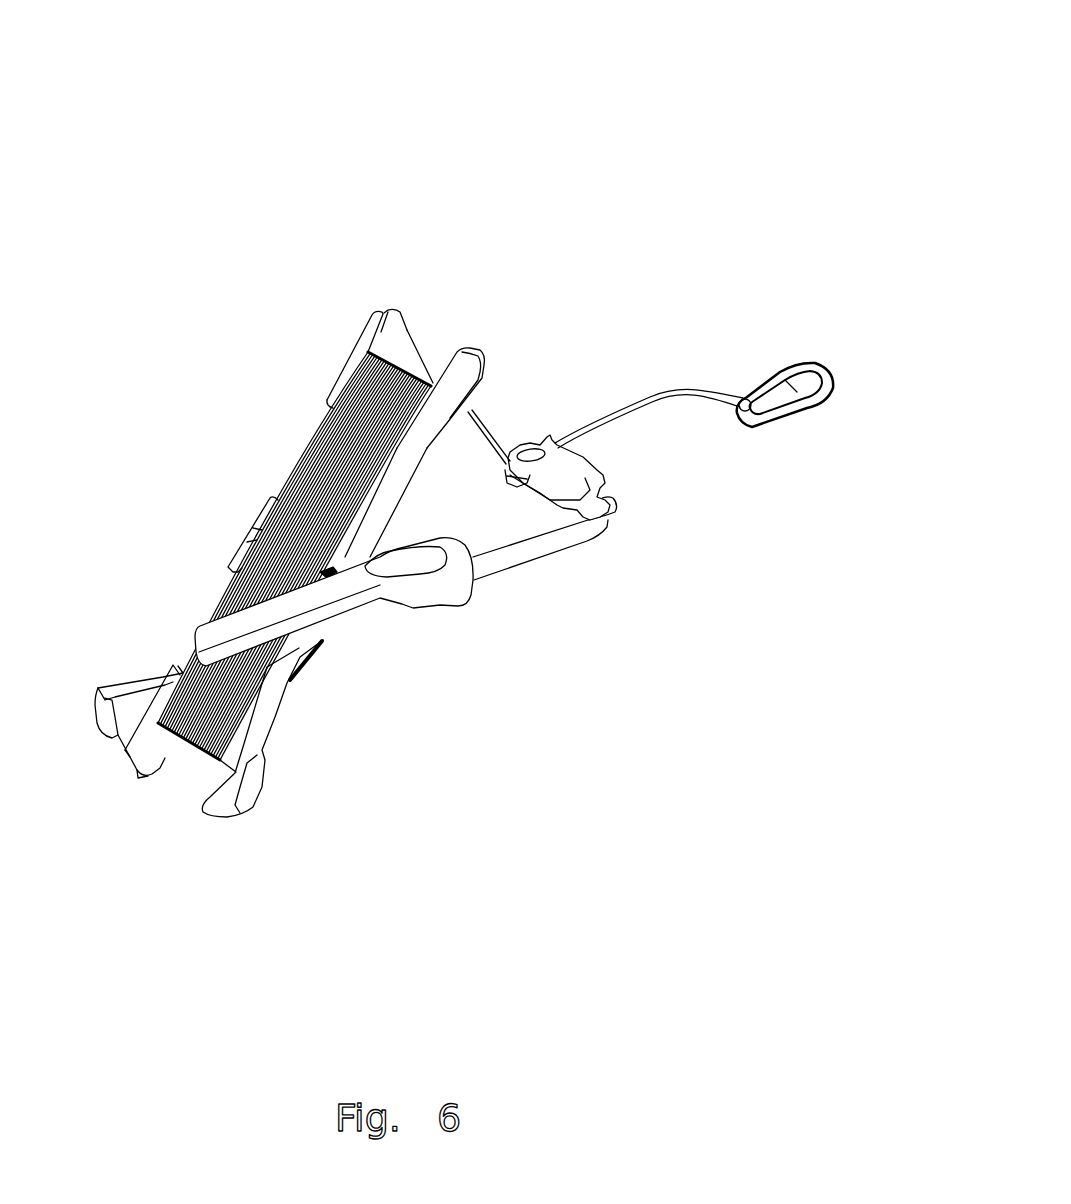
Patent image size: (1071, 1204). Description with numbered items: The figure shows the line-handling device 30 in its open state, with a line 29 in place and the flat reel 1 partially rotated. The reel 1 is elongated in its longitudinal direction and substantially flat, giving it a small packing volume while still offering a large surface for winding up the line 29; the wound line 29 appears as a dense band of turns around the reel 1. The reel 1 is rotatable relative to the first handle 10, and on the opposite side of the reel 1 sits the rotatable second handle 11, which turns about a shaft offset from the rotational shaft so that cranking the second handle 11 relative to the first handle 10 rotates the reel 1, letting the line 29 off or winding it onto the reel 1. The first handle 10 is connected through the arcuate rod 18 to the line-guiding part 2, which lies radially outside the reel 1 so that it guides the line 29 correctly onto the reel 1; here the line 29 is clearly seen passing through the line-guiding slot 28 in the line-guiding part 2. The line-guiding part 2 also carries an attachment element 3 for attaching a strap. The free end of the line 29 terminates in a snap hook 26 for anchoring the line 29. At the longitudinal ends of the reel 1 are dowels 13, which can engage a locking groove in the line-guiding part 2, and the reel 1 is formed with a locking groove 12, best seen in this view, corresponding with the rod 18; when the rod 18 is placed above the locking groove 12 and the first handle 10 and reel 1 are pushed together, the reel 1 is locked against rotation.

The flat reel 1 is at (267, 698).
The line-guiding part 2 is at (606, 483).
The attachment element 3 is at (531, 451).
The first handle 10 is at (399, 619).
The rotatable second handle 11 is at (120, 685).
The locking groove 12 is at (486, 372).
The dowel 13 is at (400, 310).
The arcuate rod 18 is at (541, 551).
The snap hook 26 is at (790, 365).
The line-guiding slot 28 is at (530, 488).
The line 29 is at (676, 392).
The line-handling device 30 is at (569, 143).